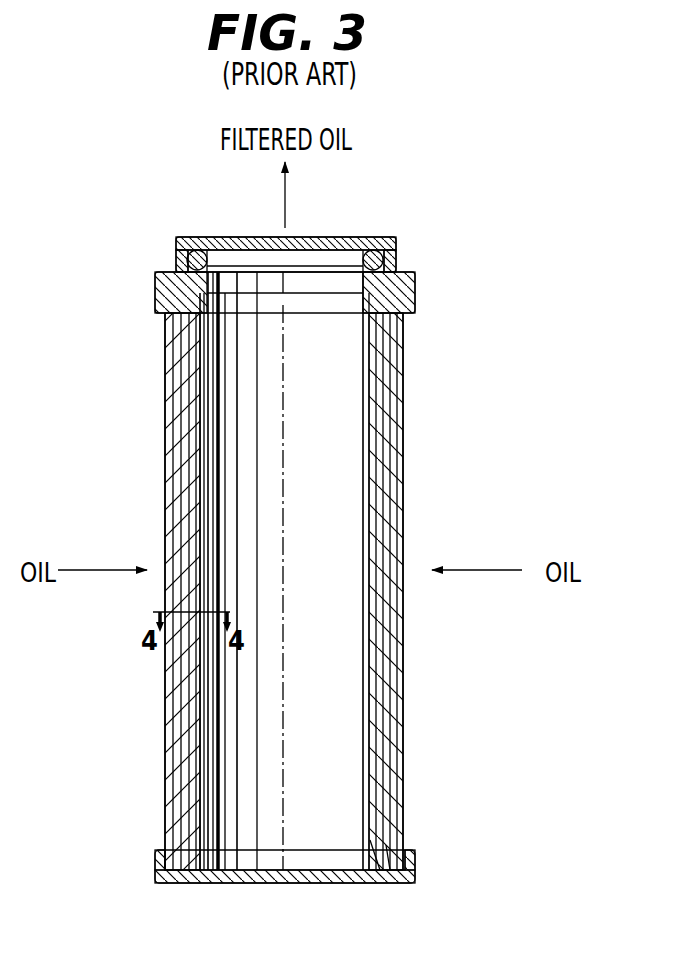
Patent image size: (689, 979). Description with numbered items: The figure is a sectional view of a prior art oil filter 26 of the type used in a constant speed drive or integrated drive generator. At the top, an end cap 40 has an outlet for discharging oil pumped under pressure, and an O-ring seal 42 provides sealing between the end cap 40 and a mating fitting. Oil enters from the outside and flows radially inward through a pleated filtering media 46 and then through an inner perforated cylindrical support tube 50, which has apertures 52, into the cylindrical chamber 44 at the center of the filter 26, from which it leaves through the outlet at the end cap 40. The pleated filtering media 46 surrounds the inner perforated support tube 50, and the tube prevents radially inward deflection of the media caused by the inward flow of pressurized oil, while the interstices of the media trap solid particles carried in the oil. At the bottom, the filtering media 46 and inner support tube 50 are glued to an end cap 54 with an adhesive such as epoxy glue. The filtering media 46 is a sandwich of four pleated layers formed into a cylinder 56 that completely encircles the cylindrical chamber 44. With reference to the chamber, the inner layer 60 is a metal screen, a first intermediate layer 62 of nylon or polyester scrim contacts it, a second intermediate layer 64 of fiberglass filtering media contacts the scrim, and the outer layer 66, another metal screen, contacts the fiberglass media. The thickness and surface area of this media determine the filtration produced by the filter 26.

The oil filter 26 is at (438, 381).
The end cap 40 is at (303, 240).
The O-ring seal 42 is at (383, 258).
The cylindrical chamber 44 is at (325, 403).
The pleated filtering media 46 is at (169, 410).
The inner perforated cylindrical support tube 50 is at (200, 504).
The apertures 52 is at (197, 740).
The end cap 54 is at (263, 881).
The cylinder 56 is at (167, 658).
The inner layer 60 is at (383, 876).
The first intermediate layer 62 is at (388, 876).
The second intermediate layer 64 is at (398, 849).
The outer layer 66 is at (398, 795).